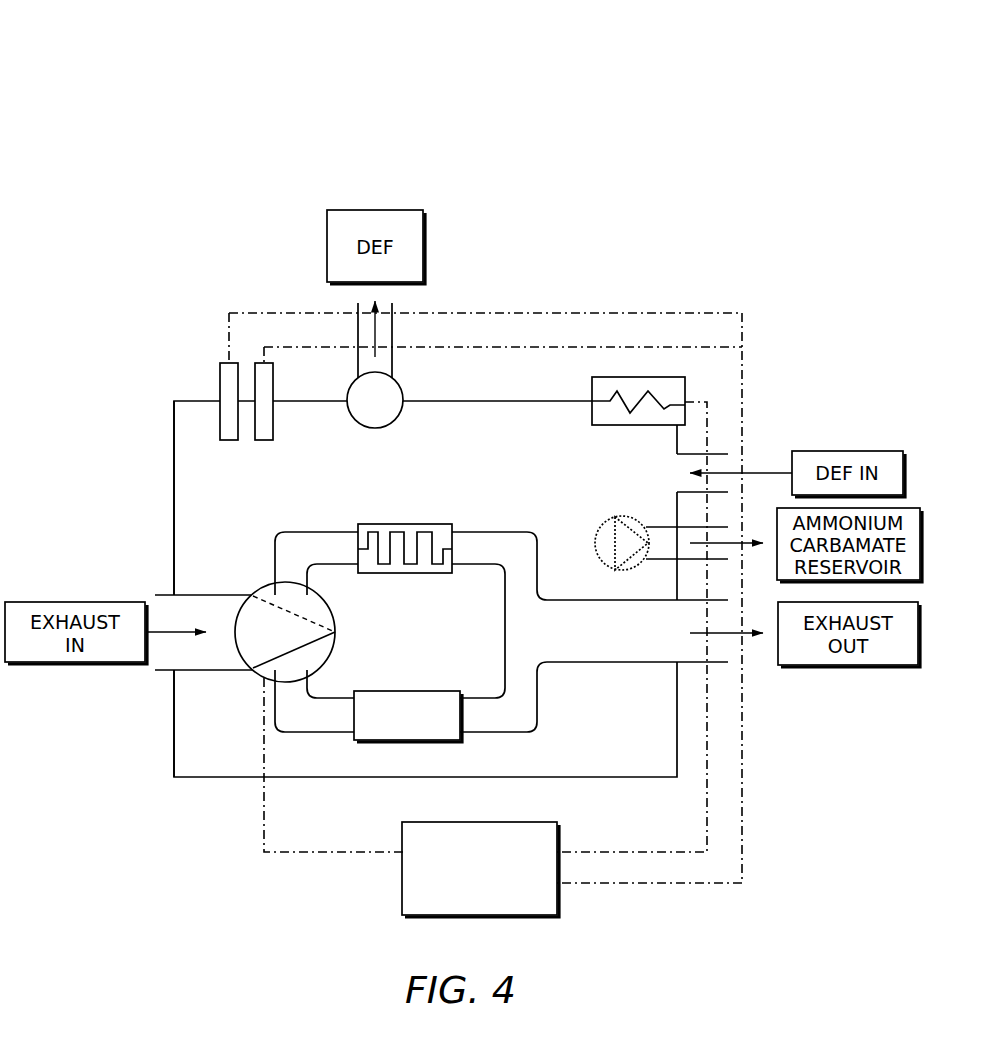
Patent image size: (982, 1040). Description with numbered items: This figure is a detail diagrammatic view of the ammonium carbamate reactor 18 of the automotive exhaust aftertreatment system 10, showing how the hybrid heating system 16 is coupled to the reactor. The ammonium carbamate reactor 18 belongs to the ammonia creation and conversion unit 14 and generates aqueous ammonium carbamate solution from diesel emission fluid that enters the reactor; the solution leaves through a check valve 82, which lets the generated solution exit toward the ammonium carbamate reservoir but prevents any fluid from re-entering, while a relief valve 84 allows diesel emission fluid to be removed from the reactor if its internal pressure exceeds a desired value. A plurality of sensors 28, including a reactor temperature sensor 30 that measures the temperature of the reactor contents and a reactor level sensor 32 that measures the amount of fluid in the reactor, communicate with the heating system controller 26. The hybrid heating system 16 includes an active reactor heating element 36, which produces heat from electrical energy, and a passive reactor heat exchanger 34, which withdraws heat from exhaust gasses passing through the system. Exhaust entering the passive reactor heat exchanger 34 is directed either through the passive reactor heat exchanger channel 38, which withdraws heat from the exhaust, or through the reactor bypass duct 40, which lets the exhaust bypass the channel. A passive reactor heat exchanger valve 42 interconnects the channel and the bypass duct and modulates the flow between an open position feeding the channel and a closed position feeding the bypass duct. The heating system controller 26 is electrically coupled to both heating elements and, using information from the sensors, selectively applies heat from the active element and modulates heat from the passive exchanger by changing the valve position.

The automotive exhaust aftertreatment system 10 is at (118, 96).
The ammonia creation and conversion unit 14 is at (70, 434).
The hybrid heating system 16 is at (518, 767).
The ammonium carbamate reactor 18 is at (160, 497).
The heating system controller 26 is at (478, 822).
The plurality of sensors 28 is at (254, 289).
The reactor temperature sensor 30 is at (220, 368).
The reactor level sensor 32 is at (256, 368).
The passive reactor heat exchanger 34 is at (486, 604).
The active reactor heating element 36 is at (644, 377).
The passive reactor heat exchanger channel 38 is at (426, 524).
The reactor bypass duct 40 is at (444, 690).
The passive reactor heat exchanger valve 42 is at (336, 640).
The check valve 82 is at (621, 516).
The relief valve 84 is at (371, 428).